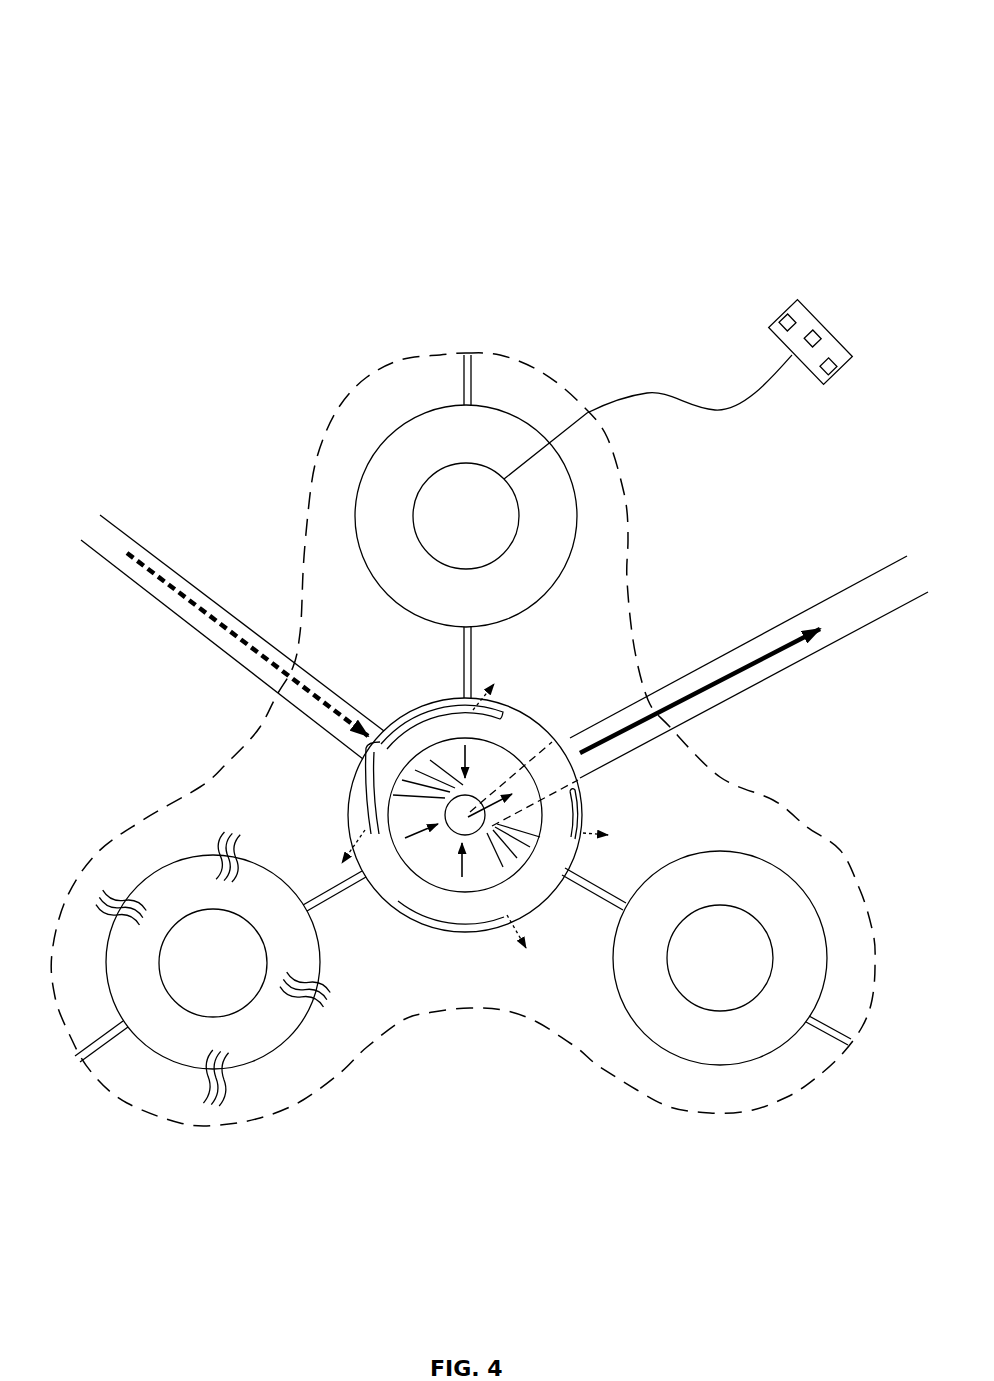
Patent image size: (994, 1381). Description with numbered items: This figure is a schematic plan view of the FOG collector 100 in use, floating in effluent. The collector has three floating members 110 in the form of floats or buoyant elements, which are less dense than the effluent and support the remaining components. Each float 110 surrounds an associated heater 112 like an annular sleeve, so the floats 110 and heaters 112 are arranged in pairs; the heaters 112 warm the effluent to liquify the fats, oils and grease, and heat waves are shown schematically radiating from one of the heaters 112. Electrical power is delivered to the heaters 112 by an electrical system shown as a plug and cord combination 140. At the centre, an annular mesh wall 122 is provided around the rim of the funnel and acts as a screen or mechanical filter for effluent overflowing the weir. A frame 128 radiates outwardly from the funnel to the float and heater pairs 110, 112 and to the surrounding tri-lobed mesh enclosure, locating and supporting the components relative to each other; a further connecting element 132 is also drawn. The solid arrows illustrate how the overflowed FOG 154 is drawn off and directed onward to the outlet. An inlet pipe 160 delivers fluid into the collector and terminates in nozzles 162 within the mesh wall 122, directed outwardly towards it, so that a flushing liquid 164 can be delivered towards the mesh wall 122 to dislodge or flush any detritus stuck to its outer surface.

The FOG collector 100 is at (60, 60).
The floating member 110 is at (386, 596).
The heater 112 is at (439, 562).
The mesh wall 122 is at (510, 708).
The frame 128 is at (822, 1030).
The connector 132 is at (600, 894).
The plug and cord combination 140 is at (815, 312).
The overflowed FOG 154 is at (758, 664).
The inlet pipe 160 is at (213, 601).
The nozzles 162 is at (367, 763).
The flushing liquid 164 is at (208, 632).